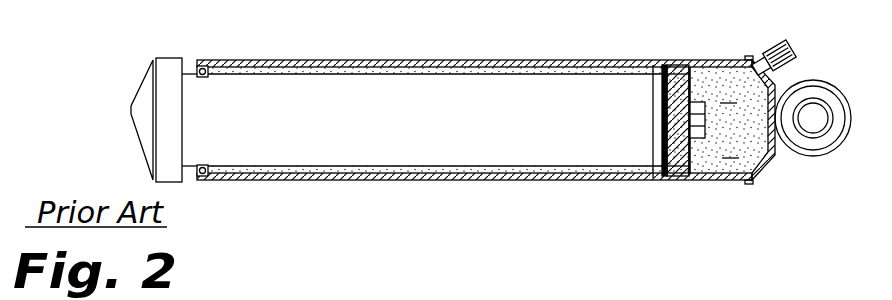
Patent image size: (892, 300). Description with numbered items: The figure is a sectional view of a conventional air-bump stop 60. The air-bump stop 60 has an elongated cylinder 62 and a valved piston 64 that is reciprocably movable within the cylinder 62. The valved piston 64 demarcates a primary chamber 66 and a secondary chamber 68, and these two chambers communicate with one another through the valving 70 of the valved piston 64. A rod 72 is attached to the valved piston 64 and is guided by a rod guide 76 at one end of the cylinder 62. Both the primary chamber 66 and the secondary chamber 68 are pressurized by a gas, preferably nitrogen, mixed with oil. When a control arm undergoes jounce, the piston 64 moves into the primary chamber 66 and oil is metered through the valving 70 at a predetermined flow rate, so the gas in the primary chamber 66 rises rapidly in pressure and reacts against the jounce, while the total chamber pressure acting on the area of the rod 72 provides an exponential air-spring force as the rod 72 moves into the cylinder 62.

The air-bump stop 60 is at (490, 196).
The elongated cylinder 62 is at (313, 170).
The valved piston 64 is at (698, 166).
The primary chamber 66 is at (758, 180).
The secondary chamber 68 is at (589, 155).
The valving 70 is at (657, 176).
The rod 72 is at (535, 145).
The rod guide 76 is at (196, 178).